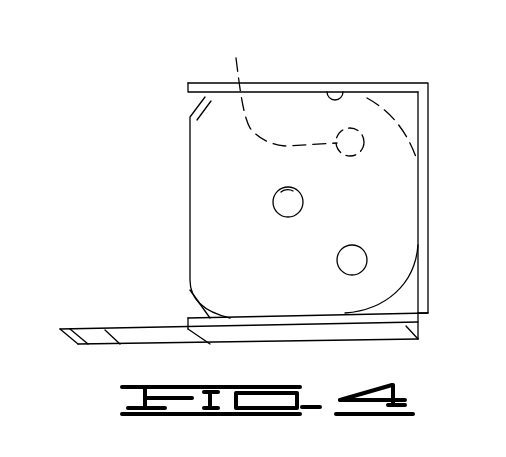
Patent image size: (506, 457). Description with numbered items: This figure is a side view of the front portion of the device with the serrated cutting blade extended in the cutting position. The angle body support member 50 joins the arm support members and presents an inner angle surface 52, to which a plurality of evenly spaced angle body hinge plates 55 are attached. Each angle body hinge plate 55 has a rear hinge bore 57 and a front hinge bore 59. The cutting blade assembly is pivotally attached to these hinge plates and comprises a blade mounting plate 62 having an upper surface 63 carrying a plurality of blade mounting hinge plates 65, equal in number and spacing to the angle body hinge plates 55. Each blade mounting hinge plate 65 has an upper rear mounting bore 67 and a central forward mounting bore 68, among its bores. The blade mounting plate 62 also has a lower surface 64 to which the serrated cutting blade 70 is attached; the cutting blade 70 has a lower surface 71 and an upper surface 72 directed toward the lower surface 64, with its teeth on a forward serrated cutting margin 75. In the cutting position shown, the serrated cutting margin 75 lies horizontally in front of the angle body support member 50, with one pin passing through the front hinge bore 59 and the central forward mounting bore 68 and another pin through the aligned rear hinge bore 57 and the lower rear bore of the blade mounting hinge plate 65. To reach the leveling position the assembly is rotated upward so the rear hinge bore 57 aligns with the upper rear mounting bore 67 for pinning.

The angle body support member 50 is at (270, 83).
The inner angle surface 52 is at (345, 100).
The angle body hinge plate 55 is at (377, 237).
The rear hinge bore 57 is at (342, 270).
The front hinge bore 59 is at (279, 210).
The blade mounting plate 62 is at (370, 320).
The upper surface 63 is at (396, 312).
The lower surface 64 is at (408, 327).
The blade mounting hinge plate 65 is at (390, 110).
The upper rear mounting bore 67 is at (236, 56).
The central forward mounting bore 68 is at (283, 193).
The serrated cutting blade 70 is at (280, 335).
The lower surface 71 is at (130, 345).
The upper surface 72 is at (112, 329).
The forward serrated cutting margin 75 is at (65, 329).